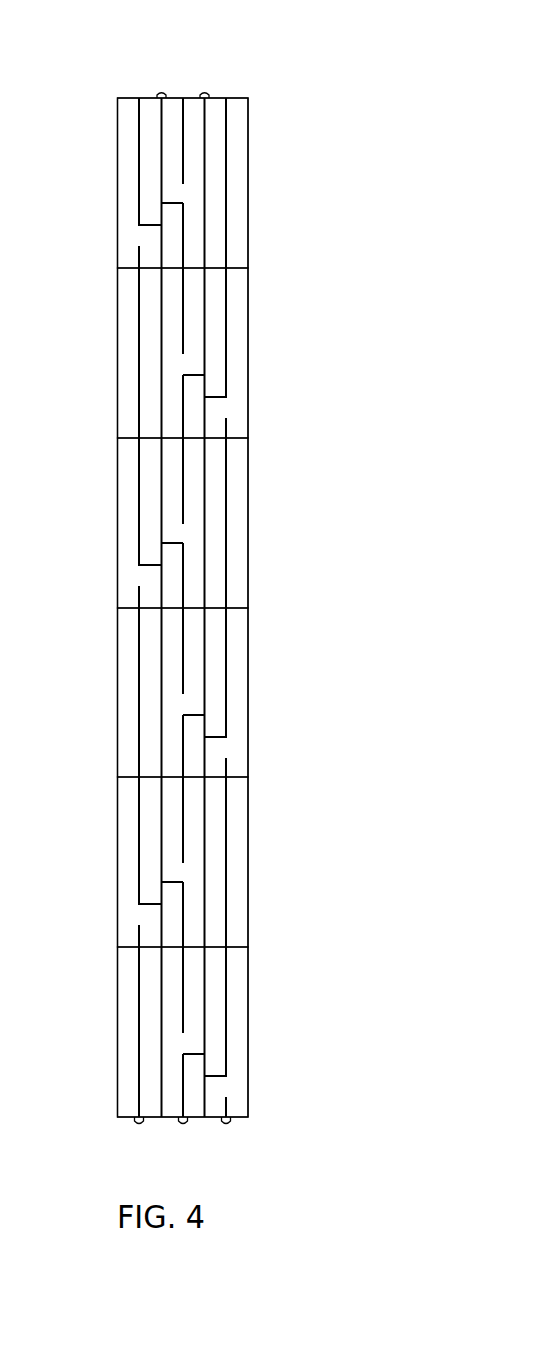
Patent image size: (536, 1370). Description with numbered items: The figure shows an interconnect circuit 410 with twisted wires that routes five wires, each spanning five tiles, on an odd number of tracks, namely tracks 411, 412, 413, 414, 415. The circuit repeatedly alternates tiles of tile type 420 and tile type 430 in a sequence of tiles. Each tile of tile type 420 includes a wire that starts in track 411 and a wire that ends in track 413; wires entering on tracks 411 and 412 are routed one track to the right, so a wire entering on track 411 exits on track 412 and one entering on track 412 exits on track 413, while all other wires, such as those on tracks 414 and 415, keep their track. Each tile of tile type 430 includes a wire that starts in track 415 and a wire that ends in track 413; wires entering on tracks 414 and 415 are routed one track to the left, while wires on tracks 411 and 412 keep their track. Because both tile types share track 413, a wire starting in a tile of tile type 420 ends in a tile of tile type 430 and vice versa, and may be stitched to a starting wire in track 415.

The interconnect circuit 410 is at (110, 68).
The track 411 is at (137, 1132).
The track 412 is at (157, 84).
The track 413 is at (184, 1132).
The track 414 is at (202, 84).
The track 415 is at (227, 1132).
The tile type 420 is at (118, 179).
The tile type 430 is at (118, 323).